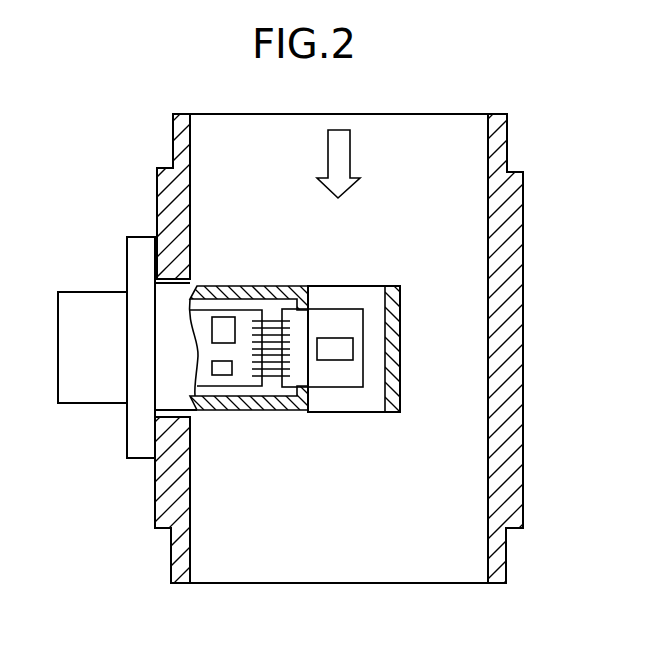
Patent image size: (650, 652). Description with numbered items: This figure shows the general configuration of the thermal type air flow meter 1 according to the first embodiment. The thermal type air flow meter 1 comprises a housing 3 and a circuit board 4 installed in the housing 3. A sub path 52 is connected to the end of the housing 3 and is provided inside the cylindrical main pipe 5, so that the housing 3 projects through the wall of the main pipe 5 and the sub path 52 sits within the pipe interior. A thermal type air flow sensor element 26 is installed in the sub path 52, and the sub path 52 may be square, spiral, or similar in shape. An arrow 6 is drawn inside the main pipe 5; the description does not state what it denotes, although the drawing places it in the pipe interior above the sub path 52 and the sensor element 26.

The thermal type air flow meter 1 is at (73, 292).
The housing 3 is at (283, 410).
The circuit board 4 is at (238, 375).
The cylindrical main pipe 5 is at (183, 135).
The direction arrow 6 is at (342, 155).
The thermal type air flow sensor element 26 is at (337, 345).
The sub path 52 is at (377, 350).